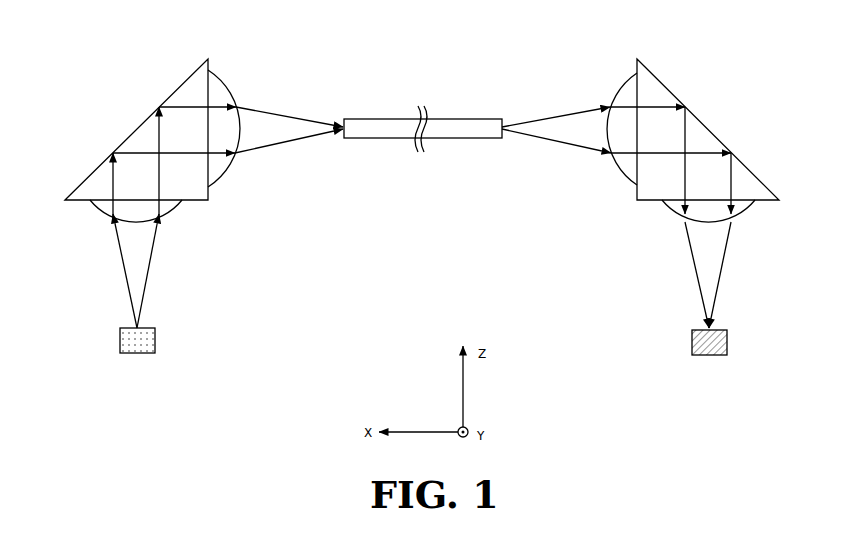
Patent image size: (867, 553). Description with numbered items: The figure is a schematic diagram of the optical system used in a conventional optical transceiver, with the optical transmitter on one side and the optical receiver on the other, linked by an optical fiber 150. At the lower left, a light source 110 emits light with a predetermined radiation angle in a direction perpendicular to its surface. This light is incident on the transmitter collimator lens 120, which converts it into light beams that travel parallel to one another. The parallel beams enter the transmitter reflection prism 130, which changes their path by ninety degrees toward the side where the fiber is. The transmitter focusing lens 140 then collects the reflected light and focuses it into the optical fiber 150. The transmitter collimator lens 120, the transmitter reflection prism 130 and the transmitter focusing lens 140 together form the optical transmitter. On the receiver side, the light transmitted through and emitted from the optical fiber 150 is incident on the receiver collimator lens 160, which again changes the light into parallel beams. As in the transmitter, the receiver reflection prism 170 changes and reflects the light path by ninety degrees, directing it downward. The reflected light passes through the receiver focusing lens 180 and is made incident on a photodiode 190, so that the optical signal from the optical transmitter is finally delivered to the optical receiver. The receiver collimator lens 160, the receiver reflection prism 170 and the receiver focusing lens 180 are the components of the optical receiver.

The light source 110 is at (118, 343).
The transmitter collimator lens 120 is at (96, 208).
The transmitter reflection prism 130 is at (126, 128).
The transmitter focusing lens 140 is at (228, 78).
The optical fiber 150 is at (462, 118).
The receiver collimator lens 160 is at (620, 80).
The receiver reflection prism 170 is at (714, 130).
The receiver focusing lens 180 is at (752, 208).
The photodiode 190 is at (728, 343).